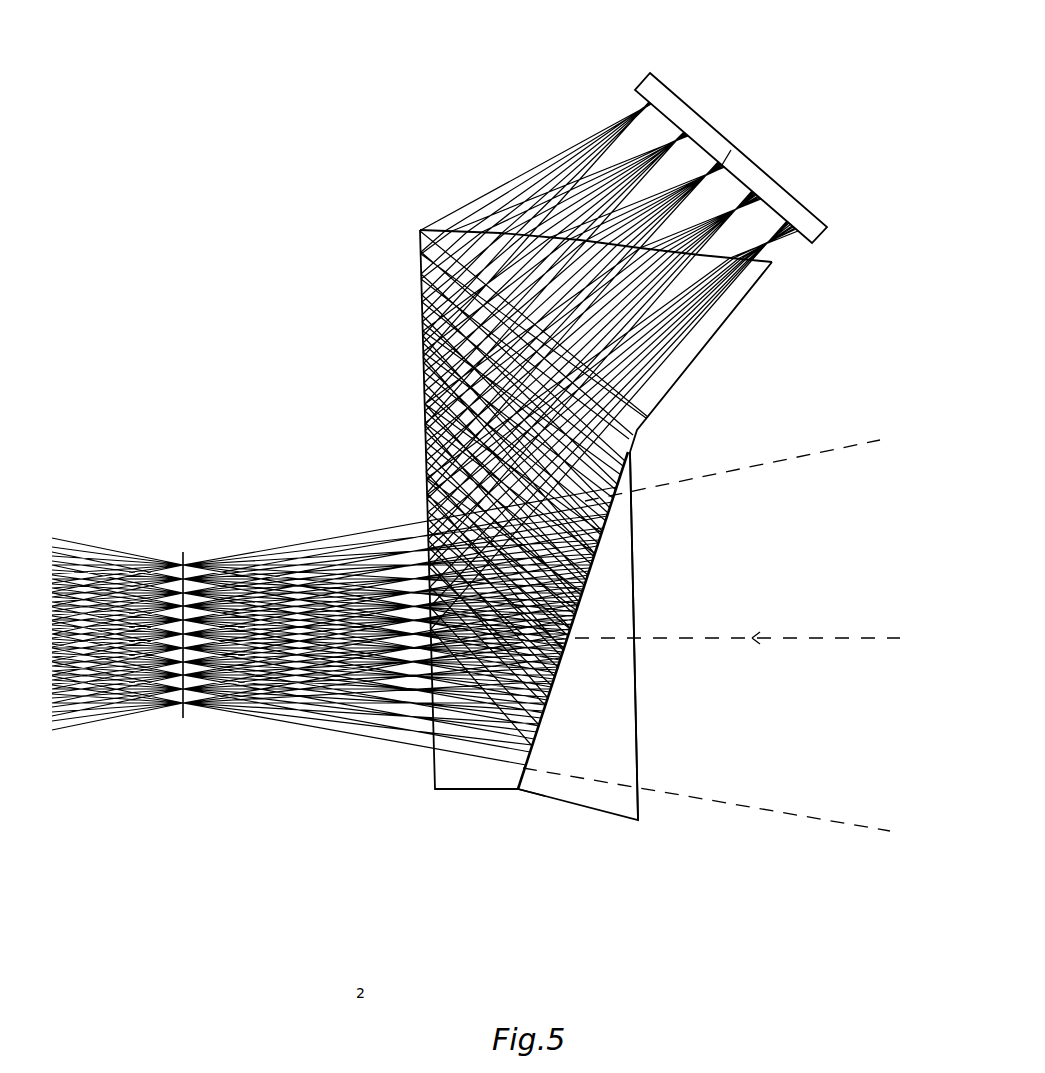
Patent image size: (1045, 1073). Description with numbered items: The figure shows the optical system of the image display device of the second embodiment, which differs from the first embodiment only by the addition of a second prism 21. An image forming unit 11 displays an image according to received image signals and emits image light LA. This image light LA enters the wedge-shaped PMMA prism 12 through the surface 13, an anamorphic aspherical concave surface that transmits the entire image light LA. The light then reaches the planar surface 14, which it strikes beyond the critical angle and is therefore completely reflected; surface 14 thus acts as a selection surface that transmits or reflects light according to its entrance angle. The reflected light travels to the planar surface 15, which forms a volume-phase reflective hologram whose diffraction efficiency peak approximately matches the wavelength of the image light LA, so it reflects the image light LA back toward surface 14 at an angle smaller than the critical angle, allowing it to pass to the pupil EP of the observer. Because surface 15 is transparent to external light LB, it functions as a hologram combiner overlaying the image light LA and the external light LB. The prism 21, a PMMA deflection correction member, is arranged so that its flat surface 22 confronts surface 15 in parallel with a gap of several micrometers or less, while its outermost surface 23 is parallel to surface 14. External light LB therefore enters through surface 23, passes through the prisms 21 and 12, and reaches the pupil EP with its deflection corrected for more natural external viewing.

The image forming unit 11 is at (641, 70).
The prism 12 is at (741, 341).
The surface 13 is at (427, 227).
The surface 14 is at (418, 238).
The surface 15 is at (517, 781).
The prism 21 is at (622, 840).
The flat surface 22 is at (526, 792).
The surface 23 is at (641, 805).
The image light LA is at (490, 196).
The external light LB is at (771, 643).
The pupil EP is at (178, 721).